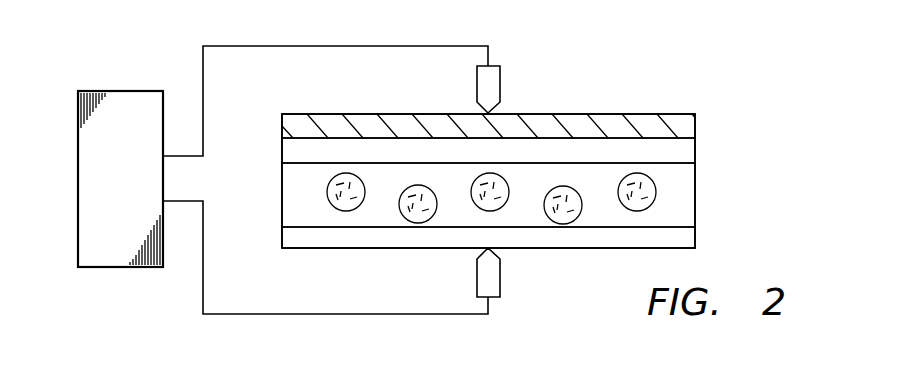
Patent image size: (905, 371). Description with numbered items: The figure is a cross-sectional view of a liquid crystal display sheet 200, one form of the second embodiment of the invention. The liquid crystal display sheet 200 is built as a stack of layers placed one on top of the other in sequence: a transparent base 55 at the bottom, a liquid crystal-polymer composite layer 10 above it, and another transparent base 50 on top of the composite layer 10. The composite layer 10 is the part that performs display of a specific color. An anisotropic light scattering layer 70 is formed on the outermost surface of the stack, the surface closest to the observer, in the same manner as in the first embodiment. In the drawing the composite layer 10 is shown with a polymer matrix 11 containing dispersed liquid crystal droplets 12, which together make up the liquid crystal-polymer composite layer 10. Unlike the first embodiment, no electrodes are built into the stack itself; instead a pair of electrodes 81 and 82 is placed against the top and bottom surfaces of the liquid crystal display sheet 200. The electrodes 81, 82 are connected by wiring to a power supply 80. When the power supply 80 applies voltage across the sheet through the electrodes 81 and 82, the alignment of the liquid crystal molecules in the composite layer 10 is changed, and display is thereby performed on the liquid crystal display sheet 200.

The liquid crystal display sheet 200 is at (635, 102).
The power supply 80 is at (118, 91).
The electrode 81 is at (500, 82).
The electrode 82 is at (500, 285).
The anisotropic light scattering layer 70 is at (695, 128).
The transparent base 50 is at (695, 150).
The liquid crystal-polymer composite layer 10 is at (541, 196).
The binder / matrix layer 11 is at (687, 210).
The particles / microcapsules 12 is at (653, 179).
The transparent base 55 is at (695, 237).